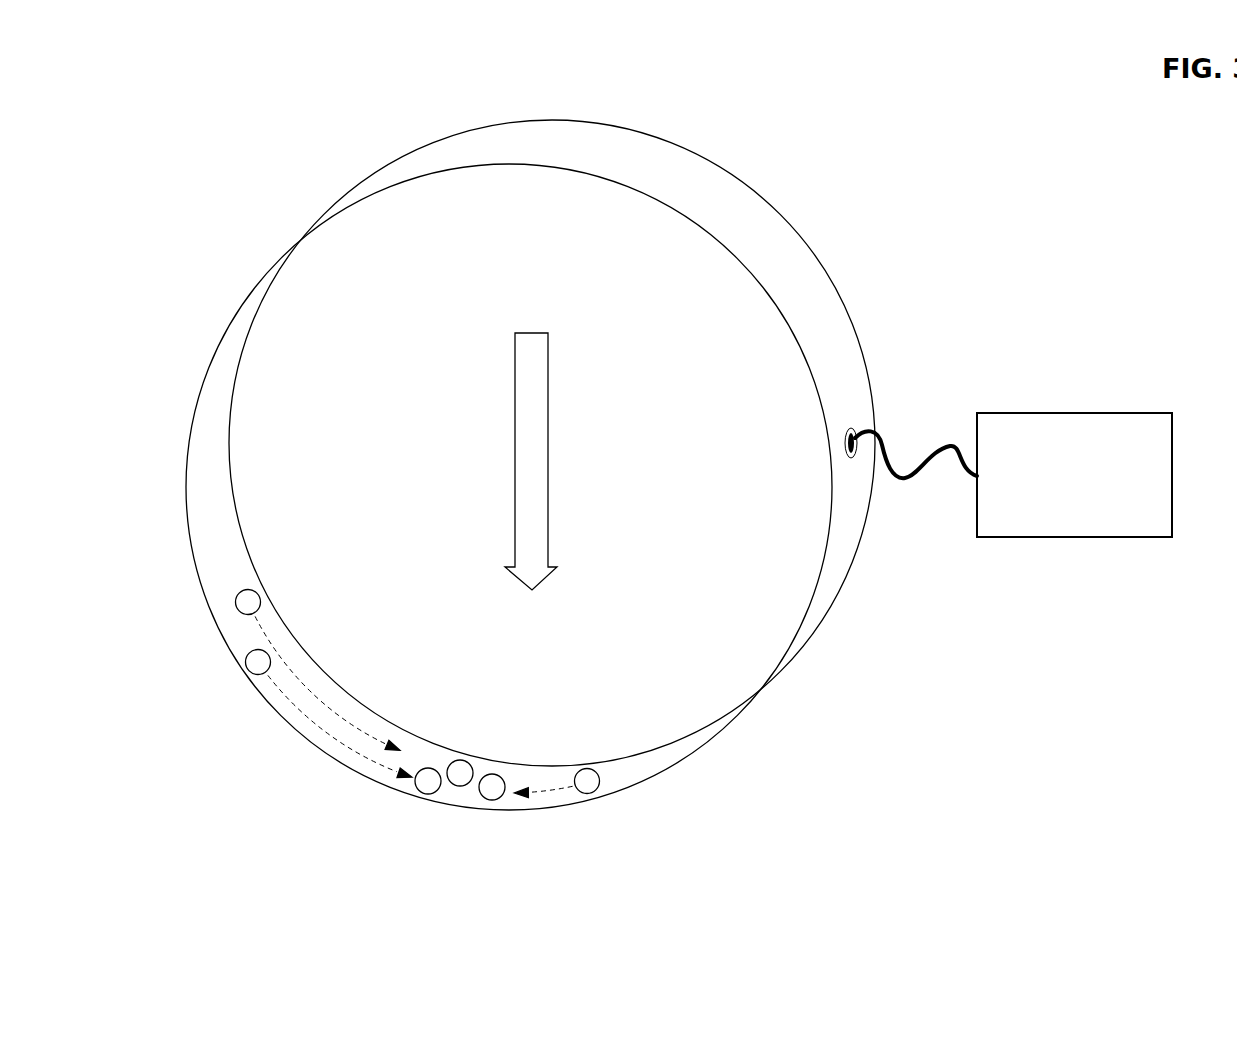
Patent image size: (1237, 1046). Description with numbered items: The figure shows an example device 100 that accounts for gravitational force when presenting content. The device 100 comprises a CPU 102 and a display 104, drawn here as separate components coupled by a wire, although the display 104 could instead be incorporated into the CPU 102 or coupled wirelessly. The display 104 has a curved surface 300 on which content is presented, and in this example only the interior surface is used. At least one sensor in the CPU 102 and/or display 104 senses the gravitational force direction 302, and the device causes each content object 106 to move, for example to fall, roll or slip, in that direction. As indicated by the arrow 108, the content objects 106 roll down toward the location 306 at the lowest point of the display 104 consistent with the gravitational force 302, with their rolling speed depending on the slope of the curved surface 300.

The device 100 is at (214, 141).
The display 104 is at (210, 362).
The curved surface 300 is at (210, 513).
The gravitational force direction 302 is at (513, 373).
The content object 106 is at (233, 606).
The arrow 108 is at (277, 717).
The location 306 is at (487, 768).
The CPU 102 is at (1090, 483).